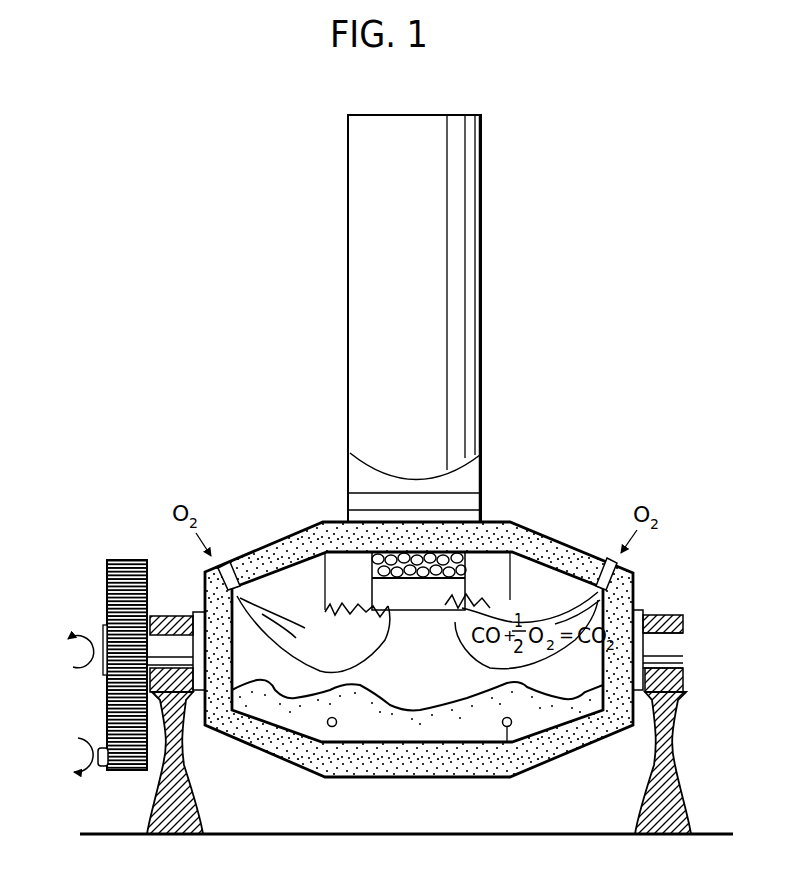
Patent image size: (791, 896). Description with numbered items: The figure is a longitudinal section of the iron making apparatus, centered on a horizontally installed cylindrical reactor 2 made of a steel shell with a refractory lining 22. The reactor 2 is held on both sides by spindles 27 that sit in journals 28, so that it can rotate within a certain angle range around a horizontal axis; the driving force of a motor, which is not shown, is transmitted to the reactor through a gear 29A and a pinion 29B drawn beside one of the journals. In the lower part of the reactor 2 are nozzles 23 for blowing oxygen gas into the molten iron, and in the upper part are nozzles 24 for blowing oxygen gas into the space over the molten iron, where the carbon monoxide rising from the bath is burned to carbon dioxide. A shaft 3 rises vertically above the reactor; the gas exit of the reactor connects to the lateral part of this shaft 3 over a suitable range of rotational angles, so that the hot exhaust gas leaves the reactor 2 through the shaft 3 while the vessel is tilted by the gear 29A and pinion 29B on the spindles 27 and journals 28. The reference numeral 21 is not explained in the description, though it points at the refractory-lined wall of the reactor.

The reactor 2 is at (422, 668).
The shaft 3 is at (421, 316).
The refractory lined vessel 21 is at (533, 530).
The refractory lining 22 is at (555, 558).
The nozzles 23 is at (498, 778).
The nozzles 24 is at (614, 565).
The spindles 27 is at (672, 643).
The journals 28 is at (662, 616).
The gear 29A is at (123, 558).
The pinion 29B is at (122, 773).